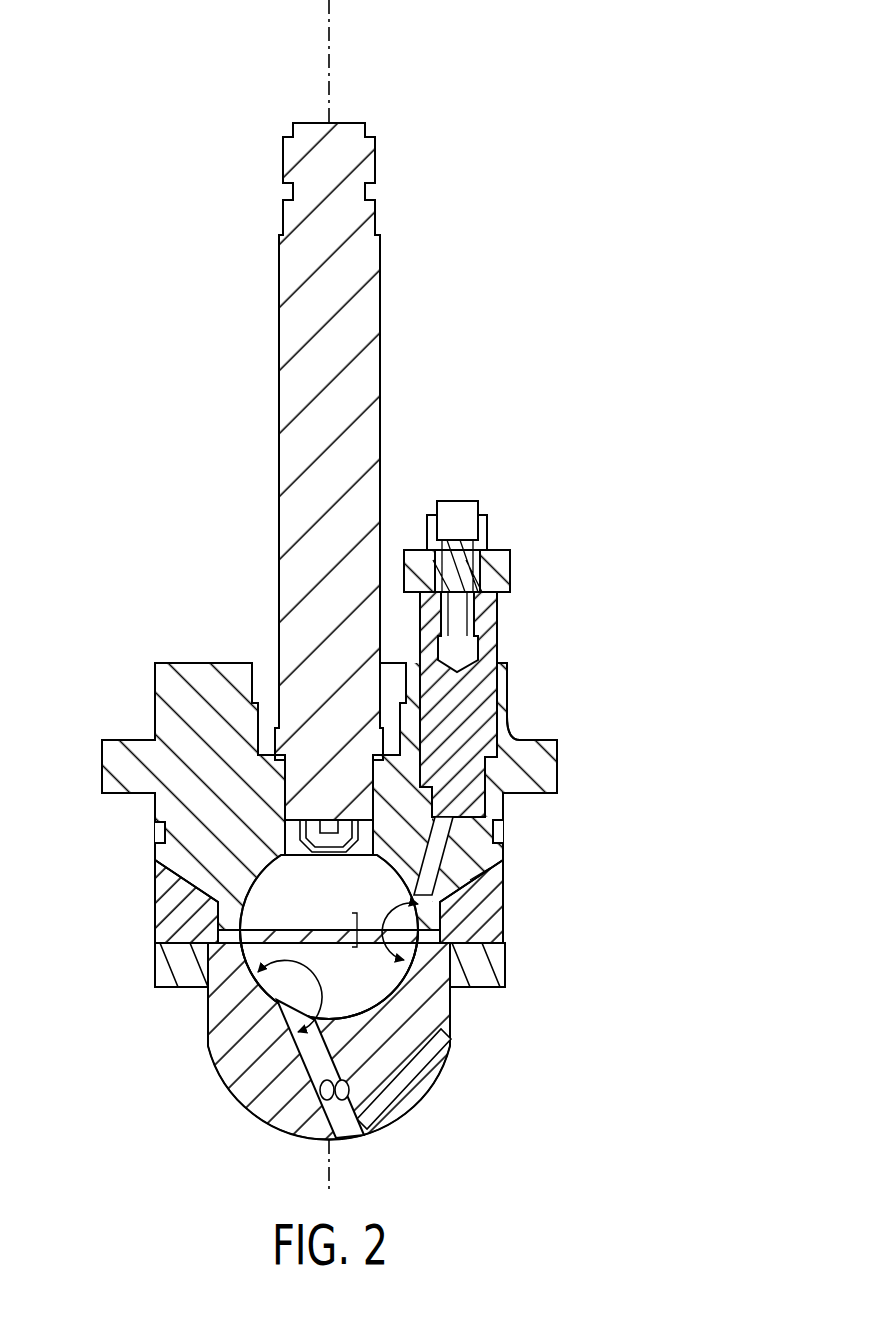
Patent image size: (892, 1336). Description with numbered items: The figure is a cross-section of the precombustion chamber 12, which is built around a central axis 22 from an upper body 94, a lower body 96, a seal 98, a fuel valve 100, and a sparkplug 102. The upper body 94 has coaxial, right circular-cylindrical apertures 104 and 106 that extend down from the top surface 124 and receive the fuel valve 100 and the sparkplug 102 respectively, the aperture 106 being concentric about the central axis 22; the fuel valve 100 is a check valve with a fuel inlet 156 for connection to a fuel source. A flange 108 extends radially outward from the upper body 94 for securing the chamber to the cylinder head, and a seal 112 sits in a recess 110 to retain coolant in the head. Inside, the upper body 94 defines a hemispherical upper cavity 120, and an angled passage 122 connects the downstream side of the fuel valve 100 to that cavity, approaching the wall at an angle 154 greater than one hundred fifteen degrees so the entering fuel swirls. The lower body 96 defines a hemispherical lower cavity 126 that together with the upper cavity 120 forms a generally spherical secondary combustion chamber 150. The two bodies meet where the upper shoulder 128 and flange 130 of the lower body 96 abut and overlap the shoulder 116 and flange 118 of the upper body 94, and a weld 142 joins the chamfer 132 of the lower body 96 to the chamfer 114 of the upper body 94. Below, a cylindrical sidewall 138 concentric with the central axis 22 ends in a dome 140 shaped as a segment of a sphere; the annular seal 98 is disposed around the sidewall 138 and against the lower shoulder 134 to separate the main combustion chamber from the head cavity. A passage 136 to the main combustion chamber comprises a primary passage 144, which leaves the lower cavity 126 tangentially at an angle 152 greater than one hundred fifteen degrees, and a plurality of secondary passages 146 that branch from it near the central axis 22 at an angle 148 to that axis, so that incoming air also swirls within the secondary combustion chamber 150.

The precombustion chamber 12 is at (361, 596).
The central axis 22 is at (329, 80).
The upper body 94 is at (564, 768).
The lower body 96 is at (456, 1010).
The seal 98 is at (506, 970).
The fuel valve 100 is at (499, 633).
The sparkplug 102 is at (384, 299).
The aperture 104 is at (507, 698).
The aperture 106 is at (267, 673).
The flange 108 is at (558, 742).
The recess 110 is at (504, 806).
The seal 112 is at (504, 830).
The chamfer 114 is at (472, 890).
The shoulder 116 is at (228, 905).
The flange 118 is at (220, 932).
The upper cavity 120 is at (289, 919).
The passage 122 is at (293, 847).
The top surface 124 is at (197, 662).
The lower cavity 126 is at (347, 981).
The upper shoulder 128 is at (480, 907).
The flange 130 is at (462, 925).
The chamfer 132 is at (165, 950).
The lower shoulder 134 is at (156, 975).
The passage 136 is at (296, 1060).
The sidewall 138 is at (209, 1040).
The dome 140 is at (362, 1141).
The weld 142 is at (480, 880).
The primary passage 144 is at (400, 1028).
The secondary passages 146 is at (318, 1095).
The angle 148 is at (318, 1140).
The secondary combustion chamber 150 is at (363, 924).
The angle 152 is at (305, 968).
The angle 154 is at (385, 952).
The fuel inlet 156 is at (460, 501).